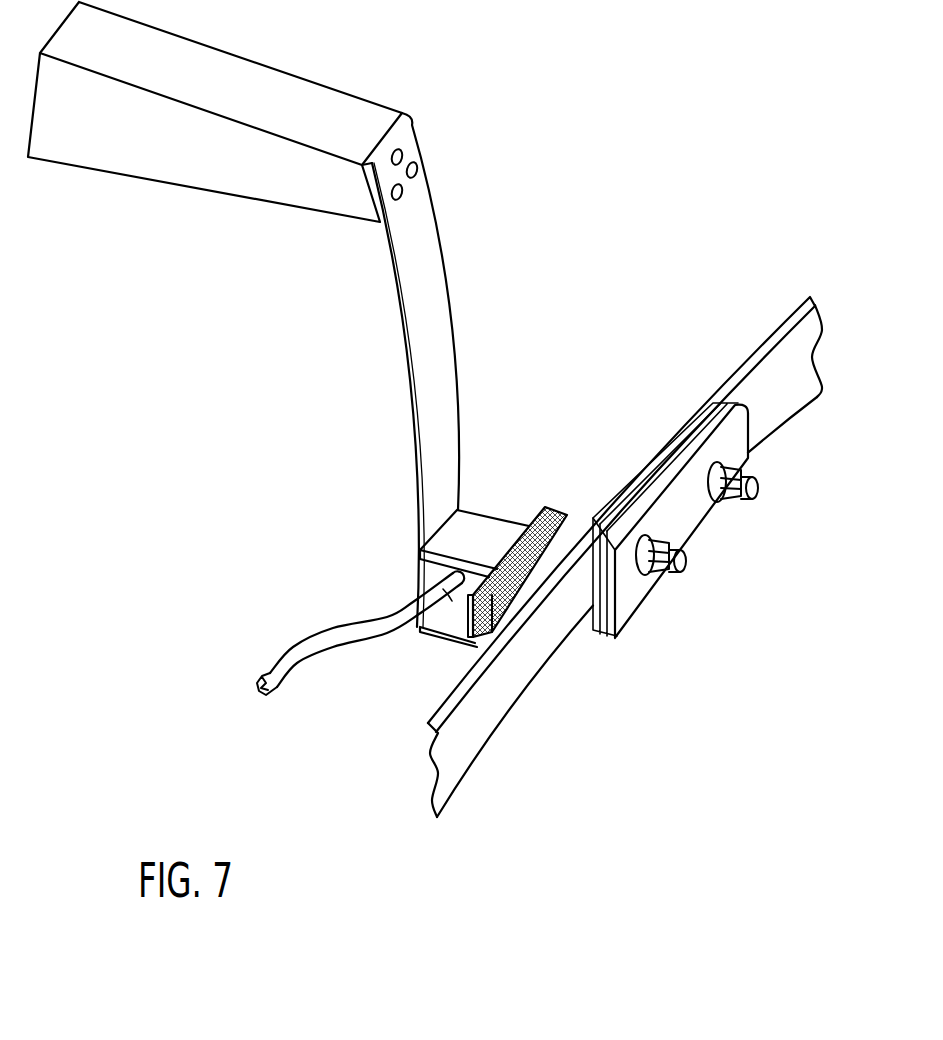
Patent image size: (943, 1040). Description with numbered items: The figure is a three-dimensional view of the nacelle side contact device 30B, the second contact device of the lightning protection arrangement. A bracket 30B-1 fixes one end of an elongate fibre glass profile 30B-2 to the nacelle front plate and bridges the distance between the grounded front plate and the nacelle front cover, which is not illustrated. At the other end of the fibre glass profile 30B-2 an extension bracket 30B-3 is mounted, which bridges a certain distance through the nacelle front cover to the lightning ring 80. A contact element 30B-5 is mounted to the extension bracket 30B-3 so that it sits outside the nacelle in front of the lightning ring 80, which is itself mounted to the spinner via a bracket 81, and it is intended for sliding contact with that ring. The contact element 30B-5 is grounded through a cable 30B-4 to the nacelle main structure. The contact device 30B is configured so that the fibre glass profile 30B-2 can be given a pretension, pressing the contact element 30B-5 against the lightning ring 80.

The nacelle side contact device 30B is at (619, 195).
The bracket 30B-1 is at (148, 167).
The fibre glass profile 30B-2 is at (423, 375).
The extension bracket 30B-3 is at (492, 527).
The cable 30B-4 is at (340, 633).
The contact element 30B-5 is at (560, 512).
The lightning ring 80 is at (765, 362).
The bracket 81 is at (697, 533).